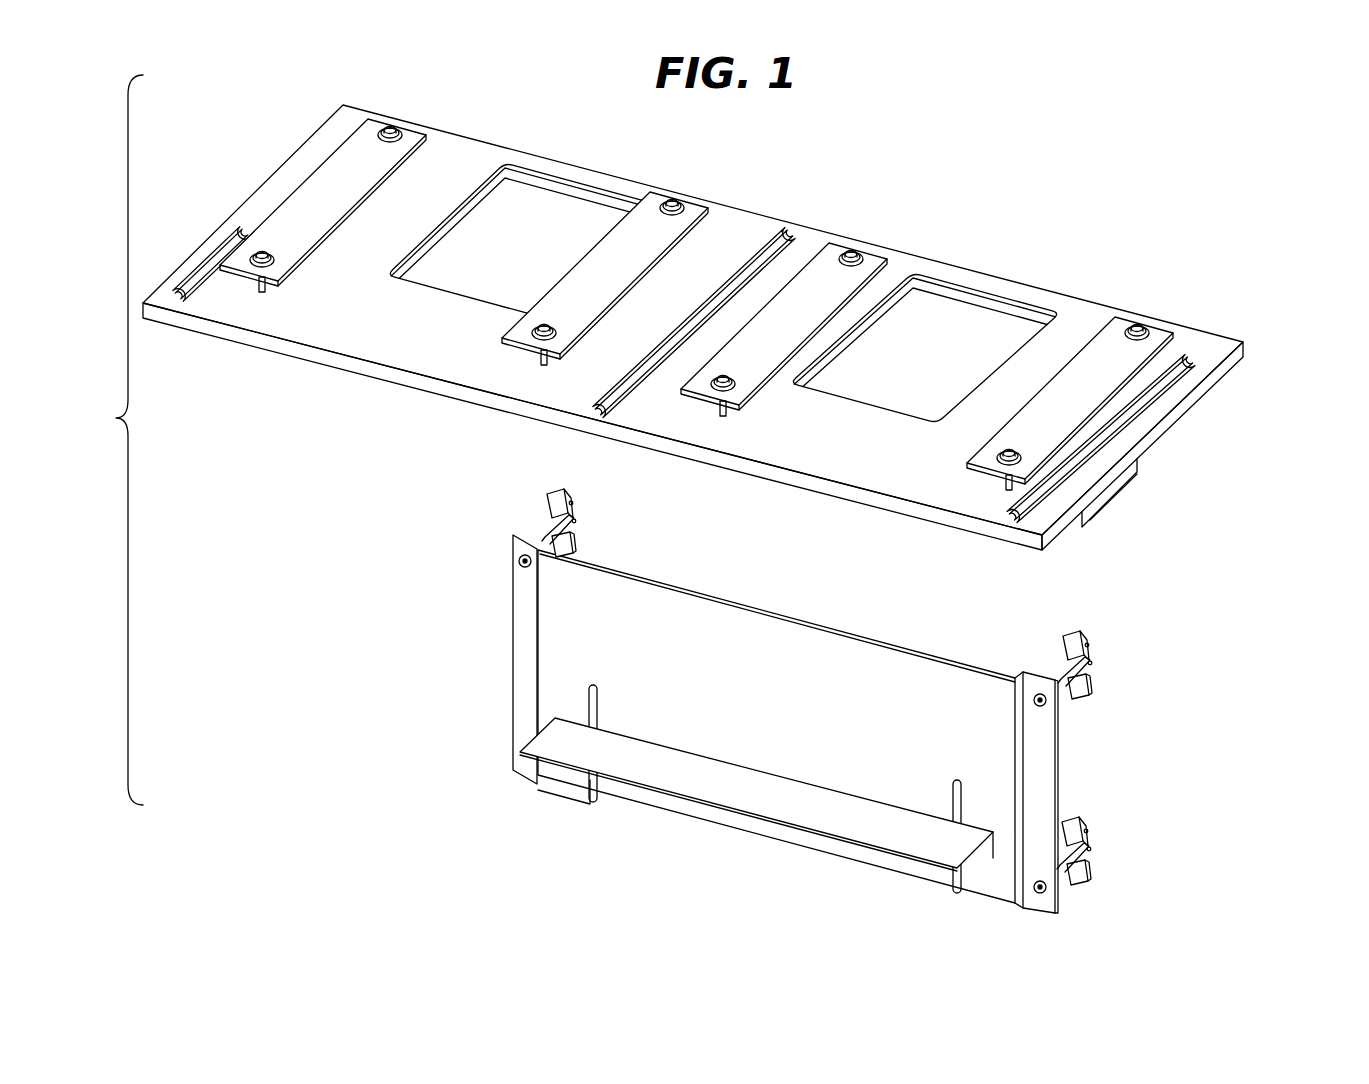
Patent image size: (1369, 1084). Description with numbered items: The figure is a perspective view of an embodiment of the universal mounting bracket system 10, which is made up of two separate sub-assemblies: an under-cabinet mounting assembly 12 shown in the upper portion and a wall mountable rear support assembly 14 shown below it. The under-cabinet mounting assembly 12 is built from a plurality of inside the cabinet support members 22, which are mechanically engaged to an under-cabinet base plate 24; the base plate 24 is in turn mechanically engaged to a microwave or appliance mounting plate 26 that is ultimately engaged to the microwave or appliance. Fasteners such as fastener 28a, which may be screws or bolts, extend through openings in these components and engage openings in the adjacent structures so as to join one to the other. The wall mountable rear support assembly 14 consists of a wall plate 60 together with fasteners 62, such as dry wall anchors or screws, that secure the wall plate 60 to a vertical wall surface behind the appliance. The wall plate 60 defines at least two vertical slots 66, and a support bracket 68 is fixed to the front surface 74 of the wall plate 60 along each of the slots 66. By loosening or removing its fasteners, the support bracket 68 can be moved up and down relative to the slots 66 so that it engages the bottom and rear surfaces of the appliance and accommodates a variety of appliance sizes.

The universal mounting bracket system 10 is at (111, 440).
The under-cabinet mounting assembly 12 is at (734, 322).
The wall mountable rear support assembly 14 is at (808, 723).
The inside the cabinet support members 22 is at (716, 292).
The under-cabinet base plate 24 is at (1074, 323).
The microwave or appliance mounting plate 26 is at (1123, 502).
The fastener 28a is at (1137, 322).
The wall plate 60 is at (663, 582).
The fasteners 62 is at (1093, 680).
The vertical slots 66 is at (596, 801).
The support bracket 68 is at (733, 792).
The front surface 74 is at (555, 627).